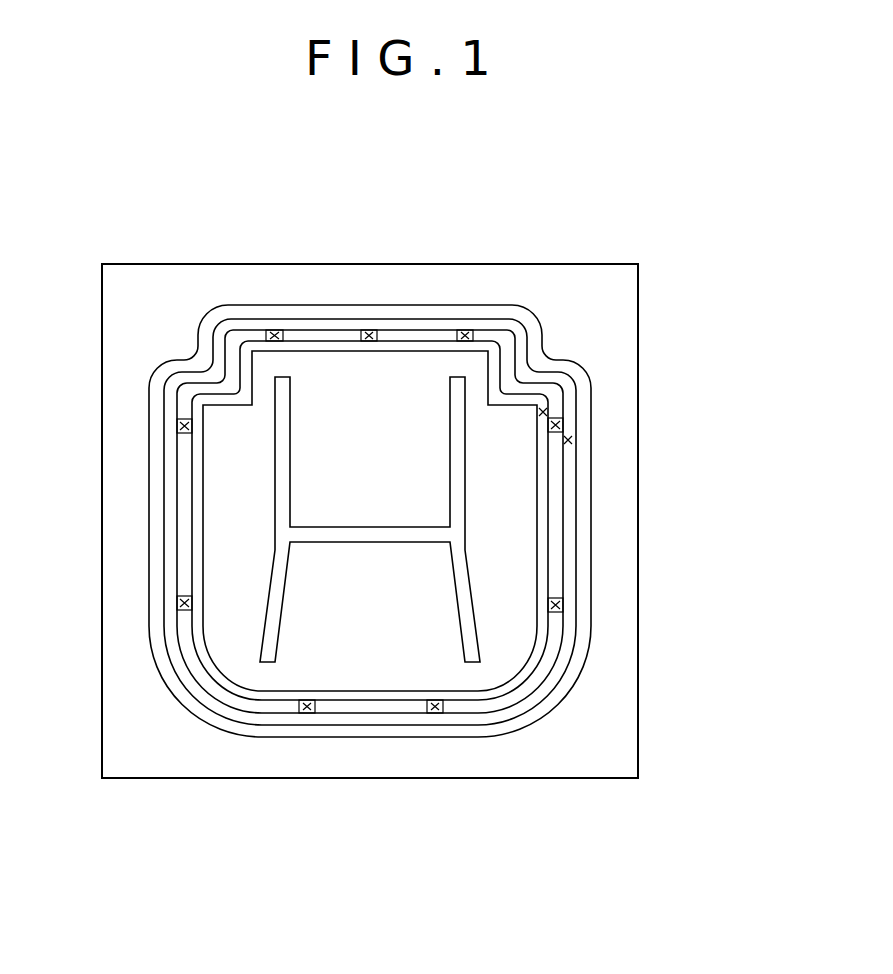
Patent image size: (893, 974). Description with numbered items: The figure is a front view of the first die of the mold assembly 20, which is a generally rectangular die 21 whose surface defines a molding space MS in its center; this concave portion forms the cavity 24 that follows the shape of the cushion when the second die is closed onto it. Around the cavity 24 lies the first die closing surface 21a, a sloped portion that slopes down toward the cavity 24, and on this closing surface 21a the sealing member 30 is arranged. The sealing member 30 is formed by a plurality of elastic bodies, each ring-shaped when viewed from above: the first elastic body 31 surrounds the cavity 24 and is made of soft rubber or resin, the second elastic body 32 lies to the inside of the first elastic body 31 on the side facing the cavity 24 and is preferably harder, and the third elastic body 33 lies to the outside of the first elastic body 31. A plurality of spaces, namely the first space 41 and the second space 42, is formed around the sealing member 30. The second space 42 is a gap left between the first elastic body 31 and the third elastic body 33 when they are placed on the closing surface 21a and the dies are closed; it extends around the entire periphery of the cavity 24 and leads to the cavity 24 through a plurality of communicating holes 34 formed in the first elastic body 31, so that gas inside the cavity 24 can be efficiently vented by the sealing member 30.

The mold assembly 20 is at (380, 484).
The first die 21 is at (380, 484).
The first die closing surface 21a is at (610, 762).
The sealing member 30 is at (466, 521).
The first elastic body 31 is at (560, 553).
The second elastic body 32 is at (542, 629).
The third elastic body 33 is at (583, 510).
The communicating hole 34 is at (275, 330).
The first space 41 is at (546, 411).
The second space 42 is at (571, 440).
The cavity 24 is at (420, 658).